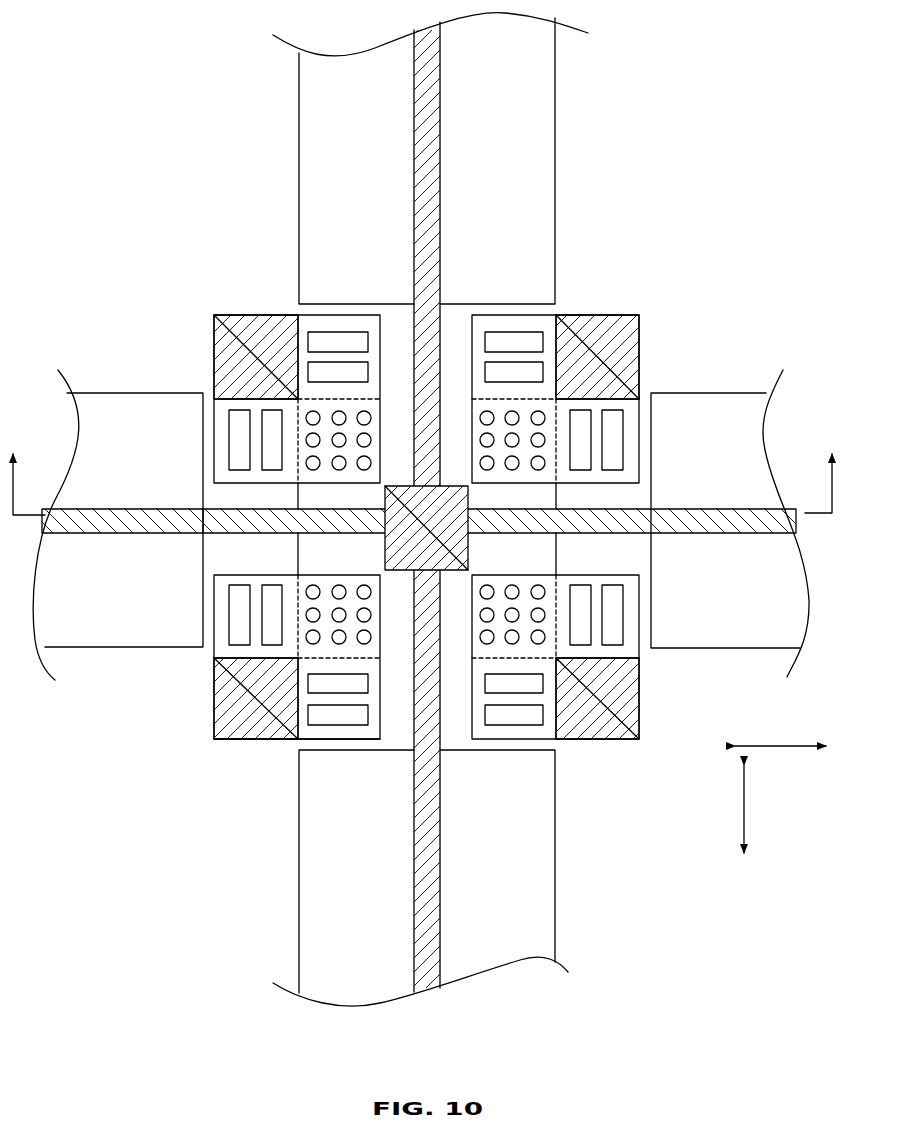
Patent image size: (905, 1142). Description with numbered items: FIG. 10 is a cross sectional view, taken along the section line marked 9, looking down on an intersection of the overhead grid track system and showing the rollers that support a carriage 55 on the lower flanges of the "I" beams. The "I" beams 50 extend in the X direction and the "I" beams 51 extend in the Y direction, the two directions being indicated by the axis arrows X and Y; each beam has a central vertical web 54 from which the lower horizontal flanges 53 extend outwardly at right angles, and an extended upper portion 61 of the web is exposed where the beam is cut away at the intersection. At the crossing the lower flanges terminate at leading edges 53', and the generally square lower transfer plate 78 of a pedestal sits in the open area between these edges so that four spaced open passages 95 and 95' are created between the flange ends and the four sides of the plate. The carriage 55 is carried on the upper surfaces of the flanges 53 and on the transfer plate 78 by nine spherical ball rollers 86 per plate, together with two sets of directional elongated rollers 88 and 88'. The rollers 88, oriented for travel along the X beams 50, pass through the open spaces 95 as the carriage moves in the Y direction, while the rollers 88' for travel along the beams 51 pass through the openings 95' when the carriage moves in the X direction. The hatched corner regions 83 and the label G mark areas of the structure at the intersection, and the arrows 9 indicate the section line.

The "I" beam 50 is at (58, 654).
The "I" beam 51 is at (562, 131).
The lower horizontal flange 53 is at (406, 505).
The leading edge of lower flange 53' is at (426, 529).
The central vertical web 54 is at (776, 508).
The carriage 55 is at (268, 748).
The extended upper portion of the web 61 is at (414, 322).
The lower steel transfer plate 78 is at (447, 405).
The contact region 83 is at (213, 328).
The spherical ball roller 86 is at (512, 470).
The directional elongated roller 88 is at (426, 543).
The directional elongated roller 88' is at (425, 520).
The open passage 95 is at (124, 525).
The open passage 95' is at (426, 516).
The section line 9 is at (422, 475).
The gap G is at (590, 204).
The X direction X is at (780, 733).
The Y direction Y is at (754, 809).